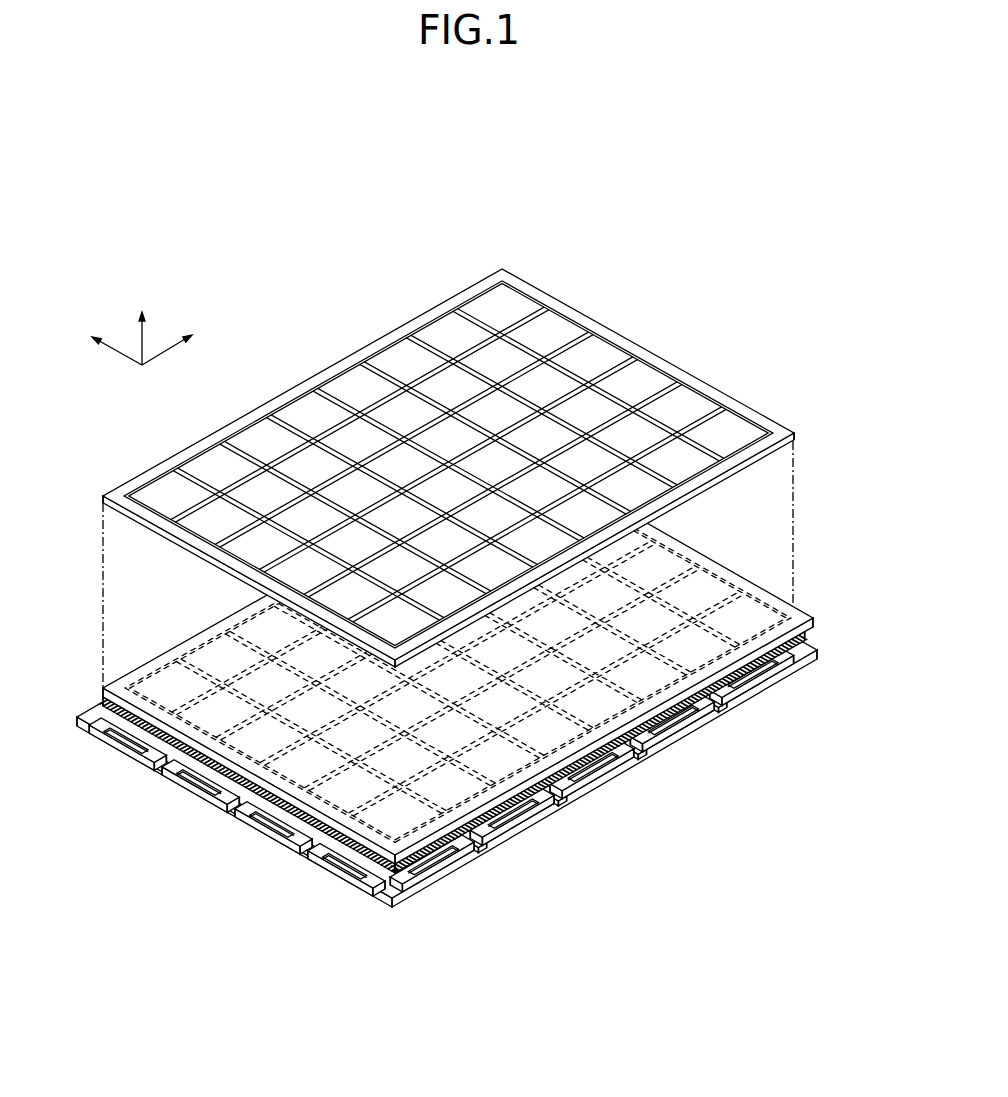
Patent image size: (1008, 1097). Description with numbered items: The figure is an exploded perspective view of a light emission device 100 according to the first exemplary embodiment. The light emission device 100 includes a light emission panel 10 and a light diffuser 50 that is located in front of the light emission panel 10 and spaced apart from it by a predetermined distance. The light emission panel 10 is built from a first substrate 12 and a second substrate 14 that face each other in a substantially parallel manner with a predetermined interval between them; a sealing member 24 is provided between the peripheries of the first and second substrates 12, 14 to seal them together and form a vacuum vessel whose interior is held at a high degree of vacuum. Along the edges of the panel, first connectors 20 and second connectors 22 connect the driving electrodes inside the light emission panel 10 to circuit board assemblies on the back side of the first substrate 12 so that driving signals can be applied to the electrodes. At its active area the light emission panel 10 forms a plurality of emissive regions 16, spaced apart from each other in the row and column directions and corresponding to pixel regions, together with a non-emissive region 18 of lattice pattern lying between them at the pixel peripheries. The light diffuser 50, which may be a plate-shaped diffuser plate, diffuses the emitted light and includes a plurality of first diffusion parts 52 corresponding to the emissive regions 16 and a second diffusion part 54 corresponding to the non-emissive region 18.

The light emission device 100 is at (420, 238).
The light emission panel 10 is at (433, 662).
The first substrate 12 is at (820, 654).
The second substrate 14 is at (699, 566).
The emissive regions 16 is at (548, 740).
The non-emissive region 18 is at (660, 666).
The first connectors 20 is at (488, 850).
The second connectors 22 is at (235, 818).
The sealing member 24 is at (357, 853).
The light diffuser 50 is at (448, 478).
The first diffusion parts 52 is at (597, 352).
The second diffusion part 54 is at (337, 403).